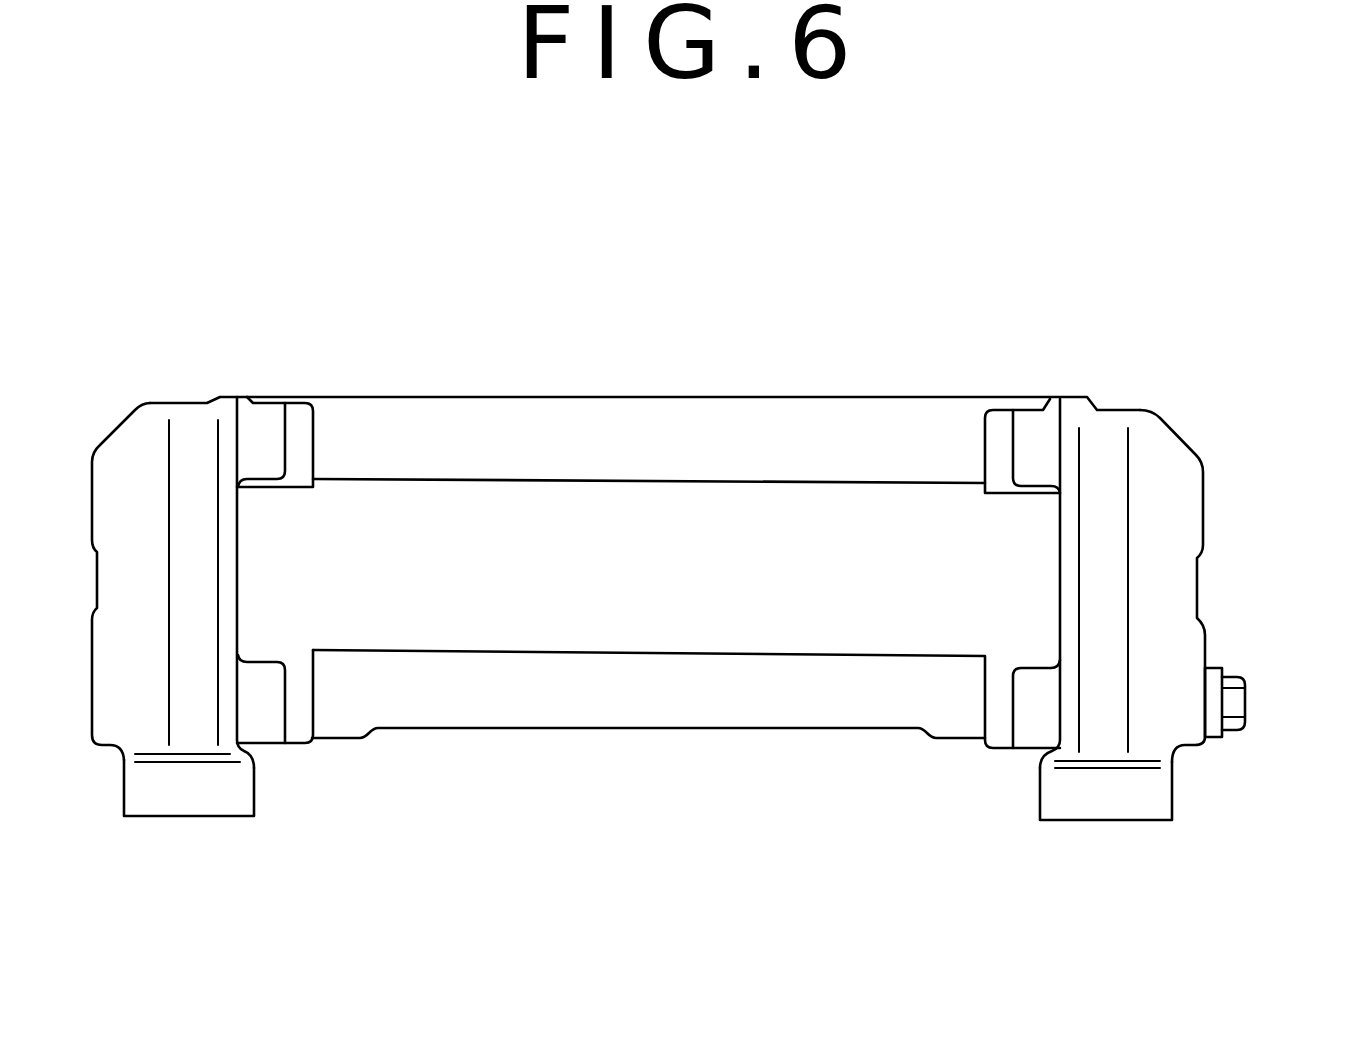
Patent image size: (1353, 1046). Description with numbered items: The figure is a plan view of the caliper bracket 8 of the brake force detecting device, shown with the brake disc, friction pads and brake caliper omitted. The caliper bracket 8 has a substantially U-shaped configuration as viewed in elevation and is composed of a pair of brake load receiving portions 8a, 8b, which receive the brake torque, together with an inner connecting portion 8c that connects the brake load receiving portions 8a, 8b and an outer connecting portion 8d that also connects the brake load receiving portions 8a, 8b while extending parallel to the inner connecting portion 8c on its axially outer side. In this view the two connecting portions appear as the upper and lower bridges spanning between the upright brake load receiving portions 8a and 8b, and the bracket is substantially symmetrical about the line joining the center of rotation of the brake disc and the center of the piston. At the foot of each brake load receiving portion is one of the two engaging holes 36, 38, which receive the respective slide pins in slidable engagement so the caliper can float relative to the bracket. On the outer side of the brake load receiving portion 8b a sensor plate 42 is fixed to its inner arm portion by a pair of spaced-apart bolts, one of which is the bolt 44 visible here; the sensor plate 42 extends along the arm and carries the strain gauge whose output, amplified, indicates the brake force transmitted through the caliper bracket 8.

The caliper bracket 8 is at (732, 368).
The brake load receiving portion 8a is at (229, 571).
The brake load receiving portion 8b is at (1066, 570).
The inner connecting portion 8c is at (655, 718).
The outer connecting portion 8d is at (608, 418).
The engaging hole 36 is at (192, 816).
The engaging hole 38 is at (1103, 821).
The sensor plate 42 is at (1213, 672).
The bolt 44 is at (1235, 708).